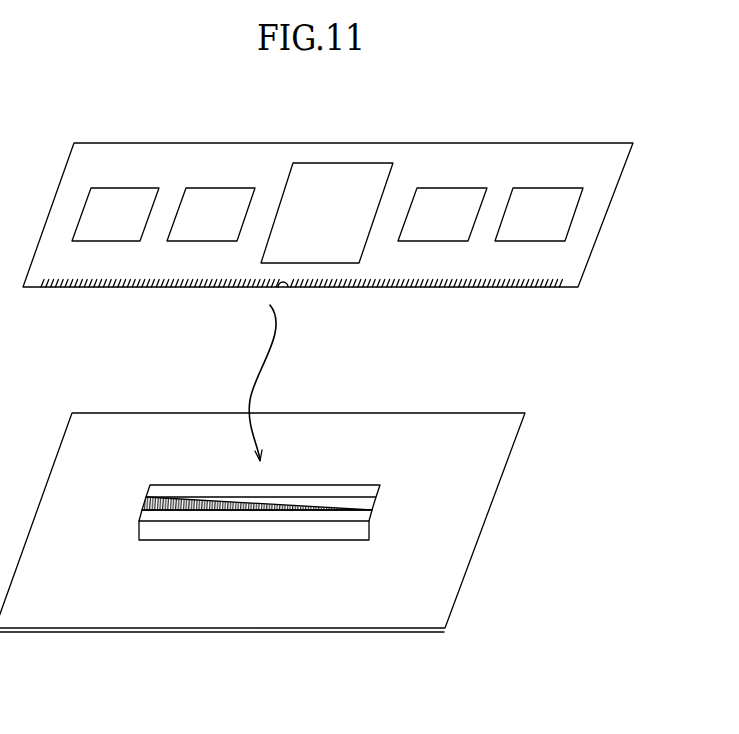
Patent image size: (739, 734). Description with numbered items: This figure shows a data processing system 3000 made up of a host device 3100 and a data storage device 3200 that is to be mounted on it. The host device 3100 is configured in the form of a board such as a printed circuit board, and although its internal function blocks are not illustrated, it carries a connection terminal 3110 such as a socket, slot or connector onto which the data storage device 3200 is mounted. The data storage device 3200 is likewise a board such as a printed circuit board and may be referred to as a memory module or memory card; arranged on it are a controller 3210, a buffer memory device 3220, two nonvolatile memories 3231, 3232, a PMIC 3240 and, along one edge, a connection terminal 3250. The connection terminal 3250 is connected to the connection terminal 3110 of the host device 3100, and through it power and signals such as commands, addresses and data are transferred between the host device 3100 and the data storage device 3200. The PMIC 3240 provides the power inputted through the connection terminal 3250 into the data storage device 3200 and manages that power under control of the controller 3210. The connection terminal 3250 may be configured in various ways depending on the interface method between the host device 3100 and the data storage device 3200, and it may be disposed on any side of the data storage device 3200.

The data processing system 3000 is at (176, 107).
The host device 3100 is at (262, 522).
The connection terminal 3110 is at (400, 479).
The data storage device 3200 is at (328, 215).
The controller 3210 is at (327, 213).
The buffer memory device 3220 is at (211, 214).
The nonvolatile memory 3231 is at (442, 214).
The nonvolatile memory 3232 is at (539, 214).
The PMIC 3240 is at (115, 214).
The connection terminal 3250 is at (58, 288).